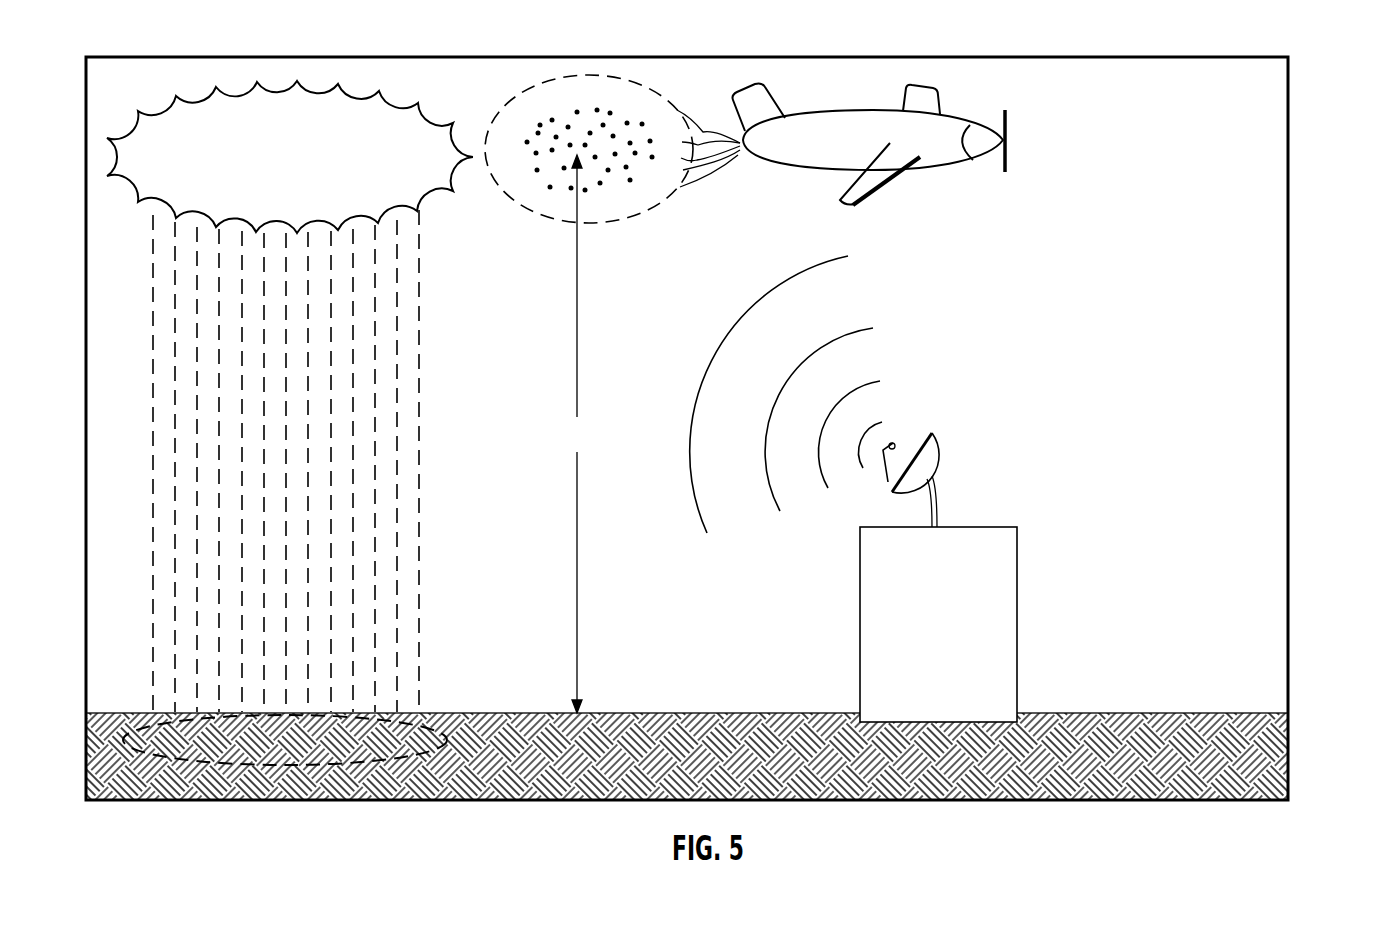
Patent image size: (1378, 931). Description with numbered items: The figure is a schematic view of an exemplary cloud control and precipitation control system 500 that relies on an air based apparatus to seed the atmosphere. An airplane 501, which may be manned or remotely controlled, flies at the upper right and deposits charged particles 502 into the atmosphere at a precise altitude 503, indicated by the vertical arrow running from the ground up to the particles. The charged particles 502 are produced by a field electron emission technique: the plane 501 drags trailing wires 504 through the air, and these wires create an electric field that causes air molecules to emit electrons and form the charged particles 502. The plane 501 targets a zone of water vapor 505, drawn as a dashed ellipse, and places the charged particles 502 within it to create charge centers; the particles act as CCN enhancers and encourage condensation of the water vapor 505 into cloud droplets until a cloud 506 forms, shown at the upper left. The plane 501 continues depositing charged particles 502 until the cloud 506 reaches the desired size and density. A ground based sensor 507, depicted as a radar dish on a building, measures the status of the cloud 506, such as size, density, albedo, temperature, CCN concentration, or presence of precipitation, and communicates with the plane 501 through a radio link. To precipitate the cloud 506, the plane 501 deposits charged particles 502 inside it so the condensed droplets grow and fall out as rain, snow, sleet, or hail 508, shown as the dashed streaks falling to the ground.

The system 500 is at (1293, 81).
The airplane 501 is at (922, 173).
The charged particles 502 is at (571, 188).
The altitude 503 is at (577, 434).
The trailing wires 504 is at (740, 148).
The zone of water vapor 505 is at (645, 208).
The cloud 506 is at (134, 182).
The sensor 507 is at (938, 495).
The hail 508 is at (435, 348).